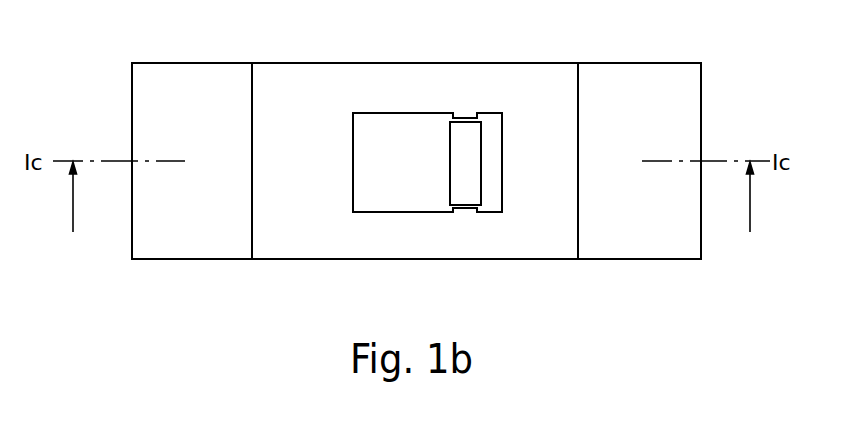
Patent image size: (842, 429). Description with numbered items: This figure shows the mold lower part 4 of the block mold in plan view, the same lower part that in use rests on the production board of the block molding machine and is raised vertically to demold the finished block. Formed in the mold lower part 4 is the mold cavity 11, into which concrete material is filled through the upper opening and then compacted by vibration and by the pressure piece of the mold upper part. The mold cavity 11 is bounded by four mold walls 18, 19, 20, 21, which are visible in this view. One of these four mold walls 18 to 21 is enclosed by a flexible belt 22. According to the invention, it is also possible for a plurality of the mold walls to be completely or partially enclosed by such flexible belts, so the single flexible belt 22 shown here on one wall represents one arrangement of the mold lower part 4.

The mold lower part 4 is at (682, 112).
The mold cavity 11 is at (418, 158).
The mold wall 18 is at (408, 212).
The mold wall 19 is at (353, 147).
The mold wall 20 is at (403, 113).
The mold wall 21 is at (467, 114).
The flexible belt 22 is at (468, 147).